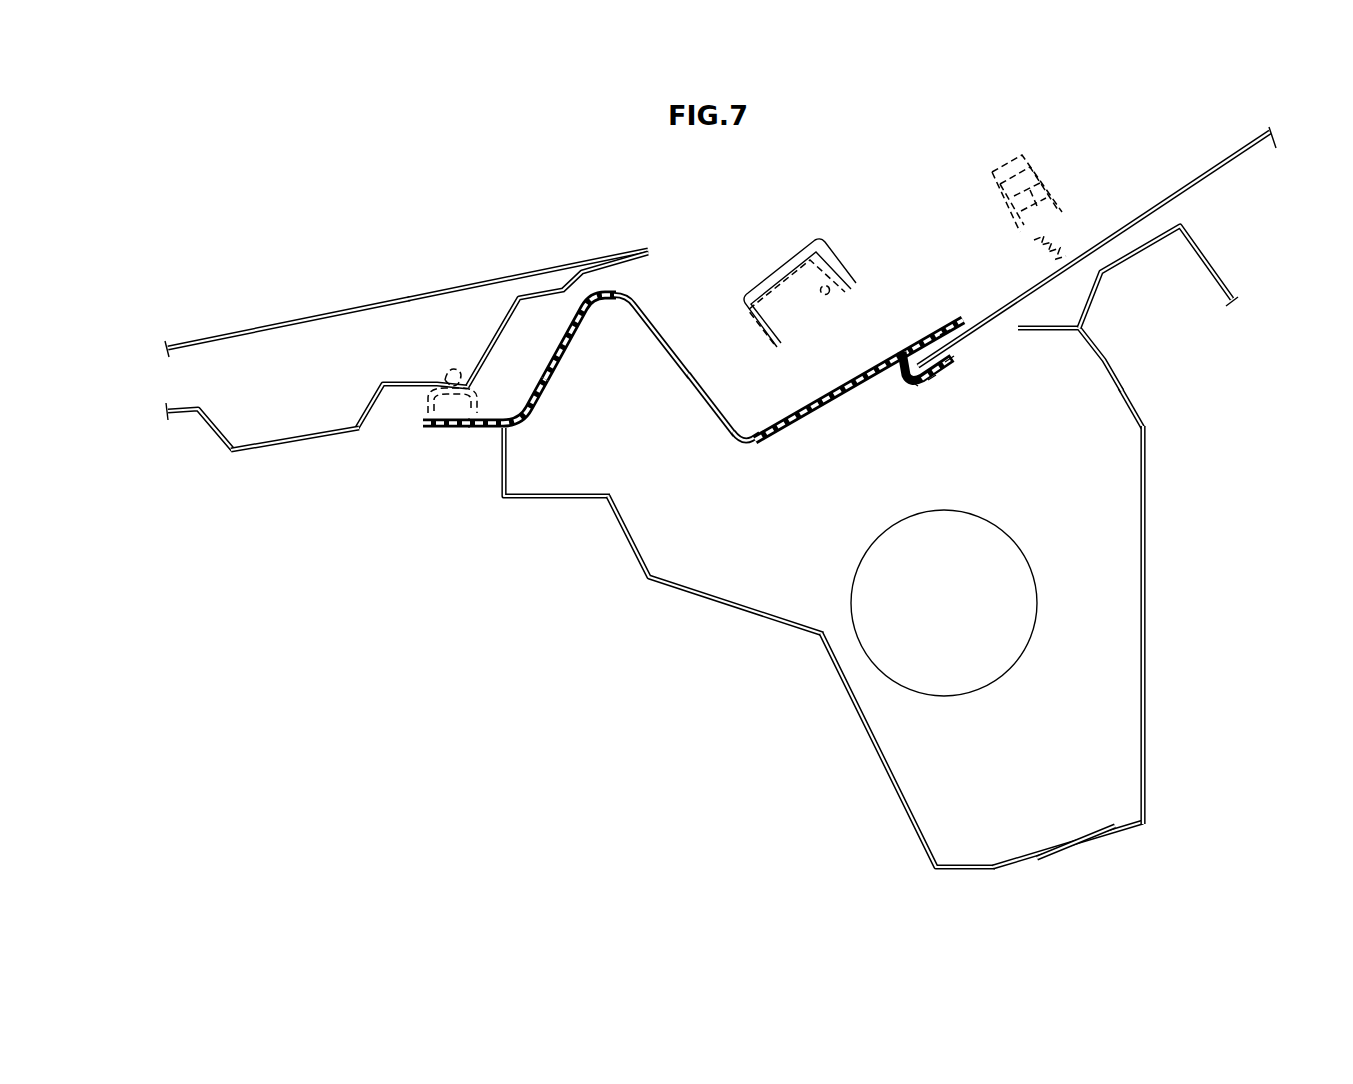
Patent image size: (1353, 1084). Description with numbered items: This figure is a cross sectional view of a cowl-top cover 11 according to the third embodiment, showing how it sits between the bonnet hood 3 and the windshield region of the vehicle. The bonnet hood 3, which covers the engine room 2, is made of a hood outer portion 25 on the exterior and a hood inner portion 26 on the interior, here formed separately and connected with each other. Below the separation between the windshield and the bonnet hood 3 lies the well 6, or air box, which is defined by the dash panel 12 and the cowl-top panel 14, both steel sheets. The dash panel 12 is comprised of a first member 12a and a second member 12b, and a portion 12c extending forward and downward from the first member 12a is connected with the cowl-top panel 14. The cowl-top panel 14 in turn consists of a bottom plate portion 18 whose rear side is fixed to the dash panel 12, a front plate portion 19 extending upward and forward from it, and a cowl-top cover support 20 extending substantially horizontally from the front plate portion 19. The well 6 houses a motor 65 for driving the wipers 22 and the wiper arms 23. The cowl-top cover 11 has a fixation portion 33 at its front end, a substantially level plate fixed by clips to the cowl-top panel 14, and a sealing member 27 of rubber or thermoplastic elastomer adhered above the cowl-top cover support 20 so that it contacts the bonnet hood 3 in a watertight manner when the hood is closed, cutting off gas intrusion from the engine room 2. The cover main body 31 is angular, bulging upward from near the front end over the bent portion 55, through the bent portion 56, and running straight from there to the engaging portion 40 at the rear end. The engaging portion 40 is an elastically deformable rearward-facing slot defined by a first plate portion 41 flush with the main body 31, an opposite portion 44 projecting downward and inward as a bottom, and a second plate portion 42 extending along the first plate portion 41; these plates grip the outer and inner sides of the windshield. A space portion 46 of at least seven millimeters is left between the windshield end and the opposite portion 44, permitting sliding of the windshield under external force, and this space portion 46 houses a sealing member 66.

The engine room 2 is at (201, 445).
The bonnet hood 3 is at (478, 287).
The well 6 is at (1125, 637).
The cowl-top cover 11 is at (660, 327).
The dash panel 12 is at (1126, 404).
The first member 12a is at (1106, 361).
The second member 12b is at (1150, 250).
The portion 12c is at (1097, 842).
The cowl-top panel 14 is at (540, 500).
The bottom plate portion 18 is at (950, 870).
The front plate portion 19 is at (636, 567).
The cowl-top cover support 20 is at (470, 436).
The wiper 22 is at (1046, 173).
The wiper arm 23 is at (846, 266).
The hood outer portion 25 is at (270, 322).
The hood inner portion 26 is at (290, 448).
The sealing member 27 is at (446, 377).
The cover main body 31 is at (683, 358).
The fixation portion 33 is at (430, 431).
The engaging portion 40 is at (905, 354).
The first plate portion 41 is at (926, 345).
The second plate portion 42 is at (956, 360).
The opposite portion 44 is at (900, 380).
The space portion 46 is at (936, 386).
The bent portion 55 is at (631, 293).
The bent portion 56 is at (745, 449).
The motor 65 is at (1020, 522).
The sealing member 66 is at (918, 392).